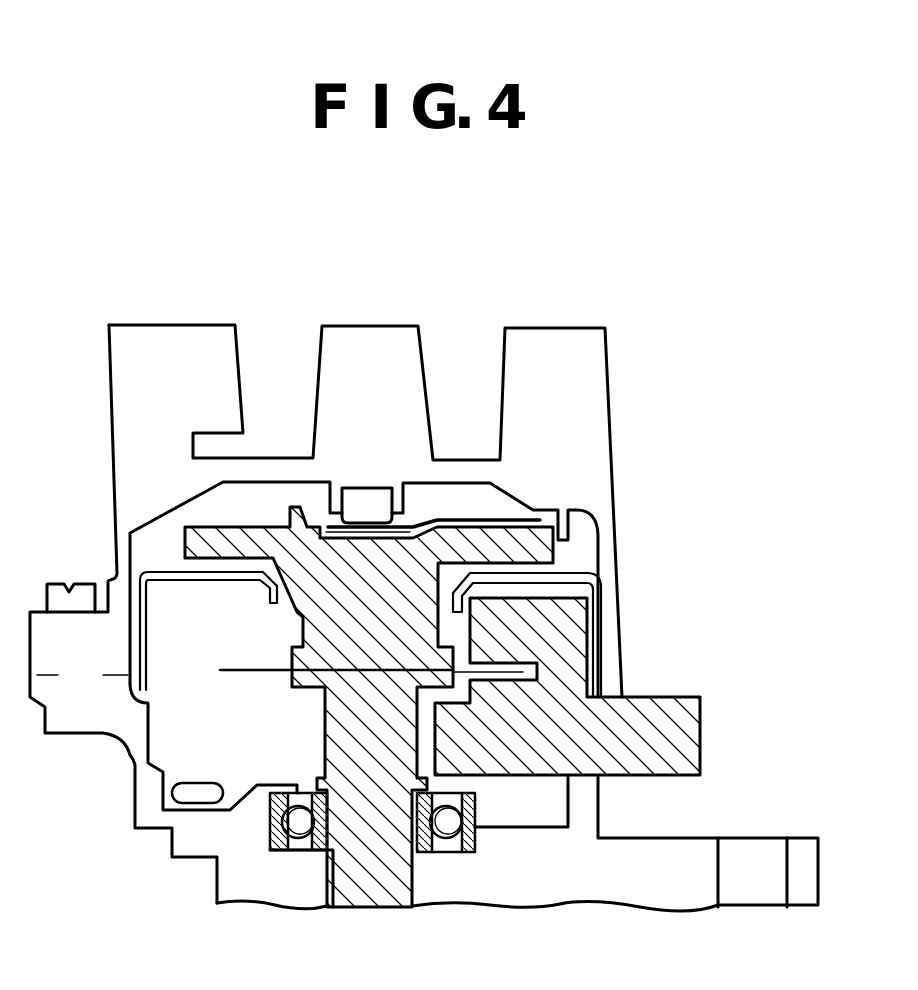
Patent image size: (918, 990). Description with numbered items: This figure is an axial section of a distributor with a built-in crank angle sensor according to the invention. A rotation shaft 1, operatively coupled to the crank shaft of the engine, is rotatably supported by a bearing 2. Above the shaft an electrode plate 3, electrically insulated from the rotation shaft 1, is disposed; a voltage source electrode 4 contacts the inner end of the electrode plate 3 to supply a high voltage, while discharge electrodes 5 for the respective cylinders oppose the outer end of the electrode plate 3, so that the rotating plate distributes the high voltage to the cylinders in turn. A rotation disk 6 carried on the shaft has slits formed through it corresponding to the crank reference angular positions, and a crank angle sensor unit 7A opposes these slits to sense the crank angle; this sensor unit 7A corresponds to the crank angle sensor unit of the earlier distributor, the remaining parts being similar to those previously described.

The rotation shaft 1 is at (390, 903).
The bearing 2 is at (300, 830).
The electrode plate 3 is at (470, 520).
The voltage source electrode 4 is at (352, 495).
The discharge electrode 5 is at (598, 528).
The rotation disk 6 is at (238, 667).
The crank angle sensor unit 7A is at (643, 707).